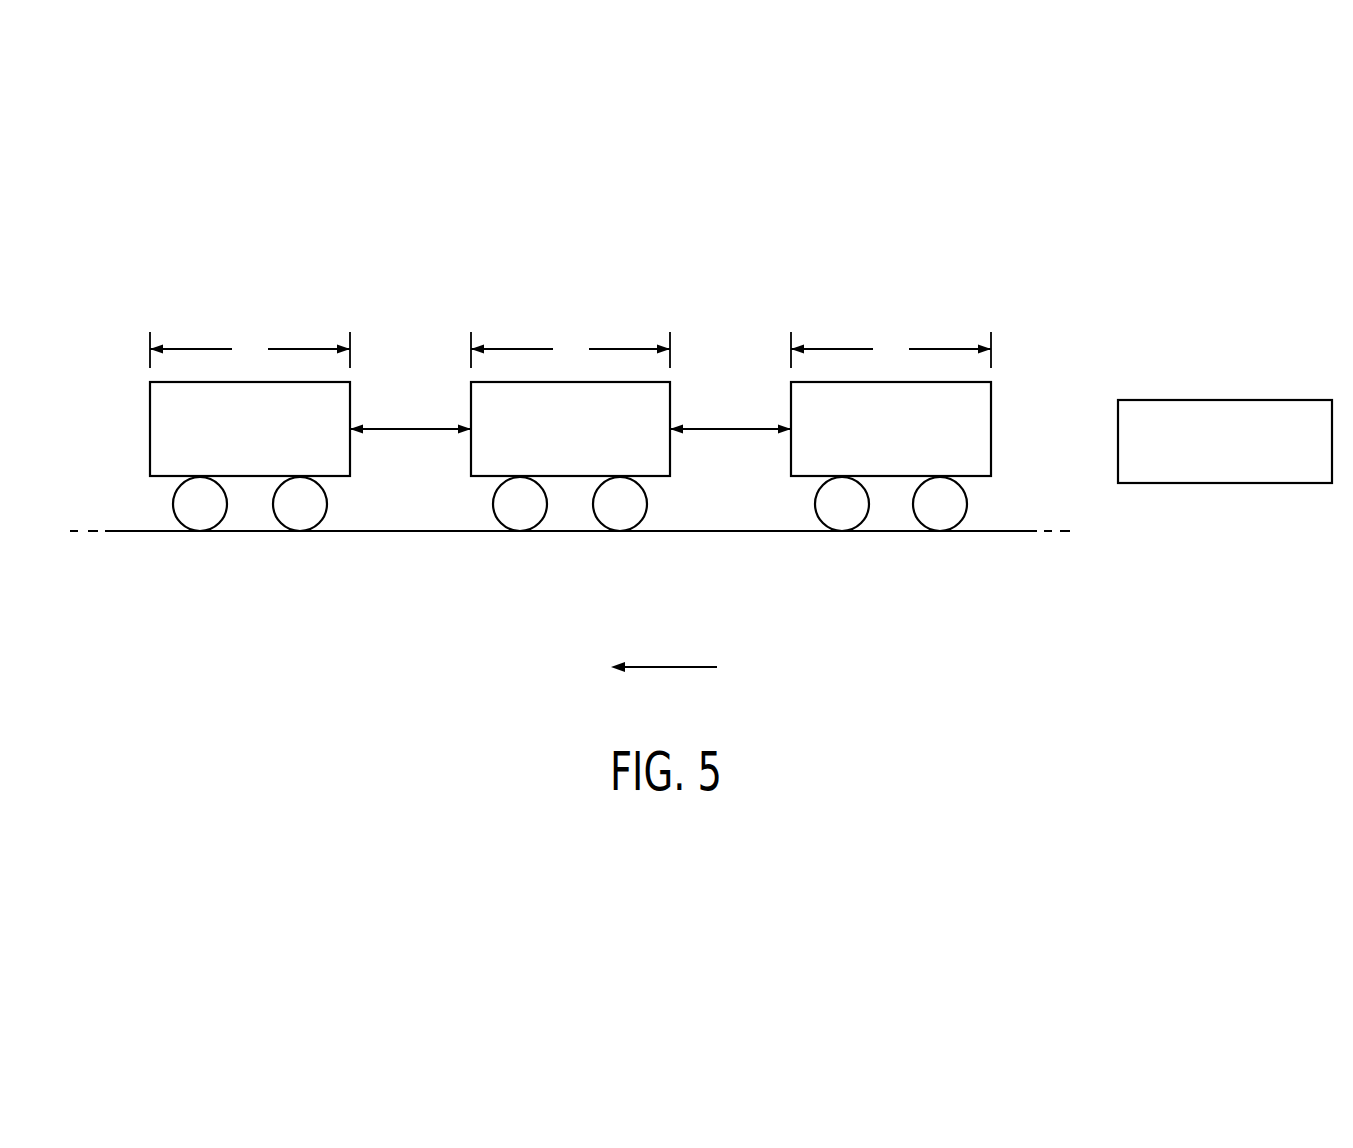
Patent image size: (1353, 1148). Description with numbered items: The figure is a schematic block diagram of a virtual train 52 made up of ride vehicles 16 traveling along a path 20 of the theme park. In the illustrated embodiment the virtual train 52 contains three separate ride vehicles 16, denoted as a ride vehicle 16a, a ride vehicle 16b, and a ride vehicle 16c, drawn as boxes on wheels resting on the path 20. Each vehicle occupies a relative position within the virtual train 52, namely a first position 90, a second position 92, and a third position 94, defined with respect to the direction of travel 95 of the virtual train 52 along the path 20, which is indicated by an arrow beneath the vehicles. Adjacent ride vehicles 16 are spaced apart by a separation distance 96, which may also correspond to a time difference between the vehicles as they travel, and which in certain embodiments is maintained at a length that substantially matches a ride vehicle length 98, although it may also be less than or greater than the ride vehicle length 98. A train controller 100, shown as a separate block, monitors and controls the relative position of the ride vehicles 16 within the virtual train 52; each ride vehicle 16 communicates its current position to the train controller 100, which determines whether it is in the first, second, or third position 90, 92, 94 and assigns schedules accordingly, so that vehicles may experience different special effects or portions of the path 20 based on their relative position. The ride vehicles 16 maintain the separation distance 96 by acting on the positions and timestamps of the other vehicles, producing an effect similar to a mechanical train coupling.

The virtual train 52 is at (1052, 242).
The ride vehicle 16 is at (569, 431).
The ride vehicle 16a is at (150, 394).
The ride vehicle 16b is at (471, 394).
The ride vehicle 16c is at (991, 394).
The ride vehicle length 98 is at (570, 350).
The separation distance 96 is at (408, 431).
The path 20 is at (462, 532).
The first position 90 is at (306, 582).
The second position 92 is at (626, 582).
The third position 94 is at (886, 582).
The direction of travel 95 is at (670, 667).
The train controller 100 is at (1223, 483).